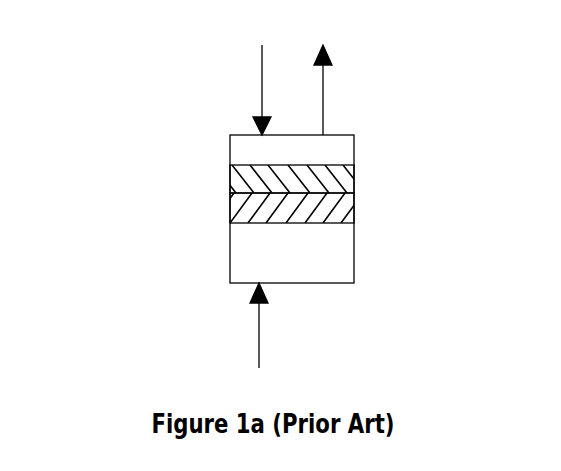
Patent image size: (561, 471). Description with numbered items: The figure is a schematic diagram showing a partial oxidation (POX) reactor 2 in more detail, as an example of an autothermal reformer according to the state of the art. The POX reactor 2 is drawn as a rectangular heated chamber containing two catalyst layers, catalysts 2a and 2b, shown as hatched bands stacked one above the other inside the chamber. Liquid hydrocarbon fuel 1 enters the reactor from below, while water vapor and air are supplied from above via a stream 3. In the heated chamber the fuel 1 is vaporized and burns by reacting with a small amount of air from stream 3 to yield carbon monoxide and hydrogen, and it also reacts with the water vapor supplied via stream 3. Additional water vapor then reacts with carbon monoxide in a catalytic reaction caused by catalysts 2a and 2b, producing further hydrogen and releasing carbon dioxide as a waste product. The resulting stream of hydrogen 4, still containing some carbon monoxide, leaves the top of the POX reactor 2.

The liquid hydrocarbon fuel 1 is at (259, 343).
The partial oxidation (POX) reactor 2 is at (190, 273).
The catalyst 2a is at (313, 172).
The catalyst 2b is at (325, 208).
The stream 3 is at (259, 81).
The stream of hydrogen 4 is at (330, 81).